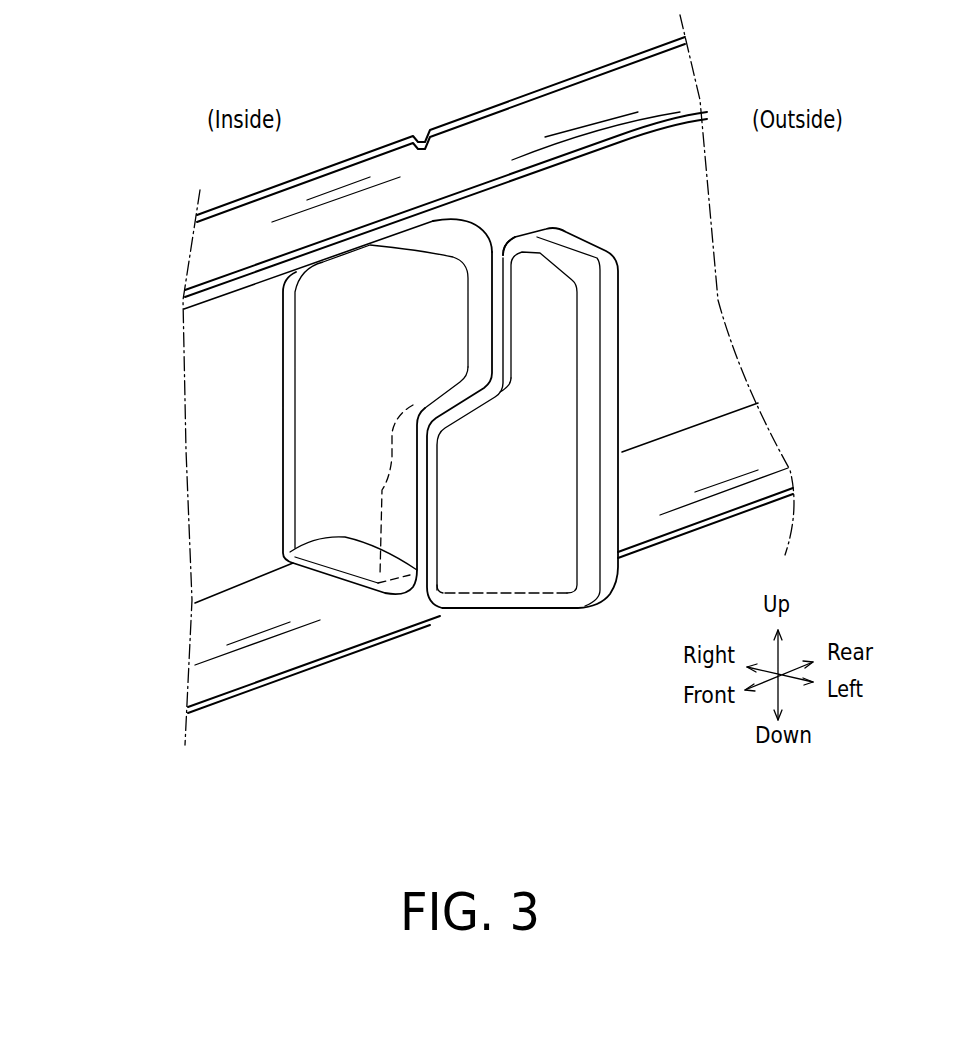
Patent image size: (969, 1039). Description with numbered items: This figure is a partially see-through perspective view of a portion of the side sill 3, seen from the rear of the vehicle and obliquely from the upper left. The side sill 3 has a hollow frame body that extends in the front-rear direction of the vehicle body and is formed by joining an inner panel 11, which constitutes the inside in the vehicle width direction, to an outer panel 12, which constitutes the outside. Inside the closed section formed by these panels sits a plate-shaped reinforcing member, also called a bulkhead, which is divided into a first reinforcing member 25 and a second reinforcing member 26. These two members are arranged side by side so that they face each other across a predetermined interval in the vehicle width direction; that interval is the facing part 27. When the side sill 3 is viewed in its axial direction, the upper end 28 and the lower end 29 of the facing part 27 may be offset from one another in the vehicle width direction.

The side sill 3 is at (390, 90).
The inner panel 11 is at (208, 347).
The outer panel 12 is at (698, 302).
The first reinforcing member 25 is at (363, 590).
The second reinforcing member 26 is at (518, 610).
The facing part 27 is at (463, 408).
The upper end 28 is at (504, 248).
The lower end 29 is at (195, 603).